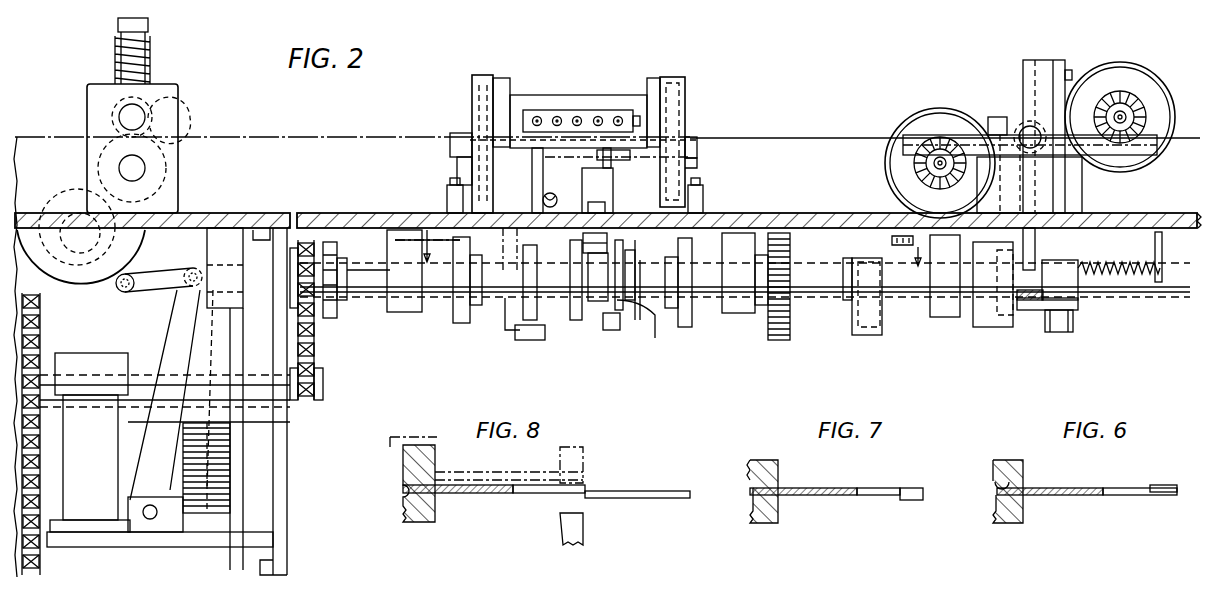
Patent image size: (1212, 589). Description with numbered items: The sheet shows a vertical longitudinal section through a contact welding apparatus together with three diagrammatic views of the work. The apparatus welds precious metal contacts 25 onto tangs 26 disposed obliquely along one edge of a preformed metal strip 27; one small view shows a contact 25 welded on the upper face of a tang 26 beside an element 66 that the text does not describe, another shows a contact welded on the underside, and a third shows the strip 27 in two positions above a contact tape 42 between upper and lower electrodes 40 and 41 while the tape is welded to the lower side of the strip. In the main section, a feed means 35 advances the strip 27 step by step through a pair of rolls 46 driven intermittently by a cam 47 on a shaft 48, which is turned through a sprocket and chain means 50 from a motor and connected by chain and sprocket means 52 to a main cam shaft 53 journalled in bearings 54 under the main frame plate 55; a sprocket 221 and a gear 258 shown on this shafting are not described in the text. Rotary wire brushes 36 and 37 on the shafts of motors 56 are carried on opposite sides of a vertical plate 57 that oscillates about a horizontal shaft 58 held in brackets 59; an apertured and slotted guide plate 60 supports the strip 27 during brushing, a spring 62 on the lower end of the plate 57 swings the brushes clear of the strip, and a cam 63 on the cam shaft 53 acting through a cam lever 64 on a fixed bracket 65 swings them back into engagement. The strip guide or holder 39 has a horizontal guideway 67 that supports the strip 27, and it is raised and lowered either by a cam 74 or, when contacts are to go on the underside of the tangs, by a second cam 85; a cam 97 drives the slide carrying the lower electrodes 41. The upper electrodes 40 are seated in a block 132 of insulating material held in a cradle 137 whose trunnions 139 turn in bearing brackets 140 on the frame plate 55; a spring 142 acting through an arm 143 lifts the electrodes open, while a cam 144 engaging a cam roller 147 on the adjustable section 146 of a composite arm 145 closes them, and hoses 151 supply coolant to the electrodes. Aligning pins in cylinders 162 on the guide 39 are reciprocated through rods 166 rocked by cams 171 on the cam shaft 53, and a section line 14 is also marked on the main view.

In FIG. 2, the section line 14 is at (658, 248).
In FIG. 7, the contacts 25 is at (915, 500).
In FIG. 6, the contacts 25 is at (1165, 485).
In FIG. 8, the tangs 26 is at (540, 493).
In FIG. 7, the tangs 26 is at (875, 488).
In FIG. 6, the tangs 26 is at (1150, 495).
In FIG. 2, the metal strip 27 is at (792, 136).
In FIG. 8, the metal strip 27 is at (483, 472).
In FIG. 7, the metal strip 27 is at (835, 495).
In FIG. 6, the metal strip 27 is at (1080, 495).
In FIG. 2, the feed means 35 is at (203, 77).
In FIG. 2, the rotary brush 36 is at (1128, 90).
In FIG. 2, the rotary brush 37 is at (915, 165).
In FIG. 2, the strip guide or holder 39 is at (703, 129).
In FIG. 8, the strip guide or holder 39 is at (400, 452).
In FIG. 7, the strip guide or holder 39 is at (762, 460).
In FIG. 6, the strip guide or holder 39 is at (1007, 460).
In FIG. 8, the upper electrodes 40 is at (590, 458).
In FIG. 8, the lower electrodes 41 is at (583, 525).
In FIG. 8, the contact tapes 42 is at (678, 498).
In FIG. 2, the rolls 46 is at (182, 113).
In FIG. 2, the cam 47 is at (228, 473).
In FIG. 2, the shaft 48 is at (140, 385).
In FIG. 2, the sprocket and chain means 50 is at (44, 322).
In FIG. 2, the chain and sprocket means 52 is at (323, 386).
In FIG. 2, the main cam shaft 53 is at (452, 292).
In FIG. 2, the bearings 54 is at (405, 312).
In FIG. 2, the main frame plate 55 is at (248, 214).
In FIG. 2, the motors 56 is at (940, 102).
In FIG. 2, the plate 57 is at (1024, 68).
In FIG. 2, the horizontal shaft 58 is at (1028, 125).
In FIG. 2, the brackets 59 is at (1083, 195).
In FIG. 2, the guide plate 60 is at (1145, 160).
In FIG. 2, the spring 62 is at (1115, 275).
In FIG. 2, the cam 63 is at (1000, 327).
In FIG. 2, the cam lever 64 is at (1070, 312).
In FIG. 2, the fixed bracket 65 is at (1070, 290).
In FIG. 6, the bushing 66 is at (995, 488).
In FIG. 8, the slot or guideway 67 is at (403, 492).
In FIG. 2, the cam 74 is at (652, 338).
In FIG. 2, the cam 85 is at (505, 320).
In FIG. 2, the cam 97 is at (575, 320).
In FIG. 2, the block of insulating material 132 is at (548, 110).
In FIG. 2, the cradle 137 is at (630, 95).
In FIG. 2, the trunnions 139 is at (472, 80).
In FIG. 2, the bearing brackets 140 is at (482, 75).
In FIG. 2, the spring 142 is at (572, 190).
In FIG. 2, the arm 143 is at (537, 178).
In FIG. 2, the cam 144 is at (603, 332).
In FIG. 2, the composite arm 145 is at (600, 160).
In FIG. 2, the adjustable section 146 is at (605, 190).
In FIG. 2, the cam roller 147 is at (583, 238).
In FIG. 2, the hoses 151 is at (618, 115).
In FIG. 2, the cylinders 162 is at (698, 165).
In FIG. 2, the rods 166 is at (445, 205).
In FIG. 2, the cams 171 is at (462, 323).
In FIG. 2, the sprocket 221 is at (337, 312).
In FIG. 2, the gear 258 is at (780, 340).